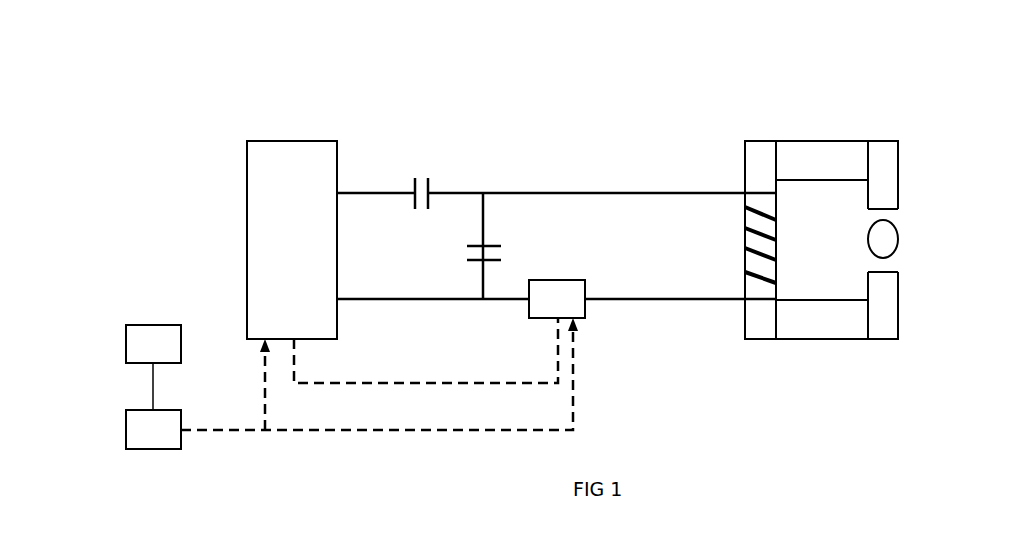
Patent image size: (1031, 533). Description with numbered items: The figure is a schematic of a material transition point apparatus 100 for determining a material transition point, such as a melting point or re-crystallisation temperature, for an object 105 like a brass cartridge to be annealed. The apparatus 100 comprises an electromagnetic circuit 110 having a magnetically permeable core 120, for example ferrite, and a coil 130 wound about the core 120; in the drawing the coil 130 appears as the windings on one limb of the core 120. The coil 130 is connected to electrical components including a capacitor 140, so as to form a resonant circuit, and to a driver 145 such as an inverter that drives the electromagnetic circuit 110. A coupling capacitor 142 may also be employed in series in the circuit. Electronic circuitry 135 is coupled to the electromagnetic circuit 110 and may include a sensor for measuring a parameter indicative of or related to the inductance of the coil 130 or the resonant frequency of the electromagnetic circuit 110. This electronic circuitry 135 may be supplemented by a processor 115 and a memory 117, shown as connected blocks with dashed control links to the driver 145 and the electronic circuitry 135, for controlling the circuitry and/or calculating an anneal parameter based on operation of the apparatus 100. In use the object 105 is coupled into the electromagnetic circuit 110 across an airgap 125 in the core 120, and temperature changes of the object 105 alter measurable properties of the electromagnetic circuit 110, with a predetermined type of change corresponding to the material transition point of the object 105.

The material transition point apparatus 100 is at (953, 47).
The object 105 is at (899, 240).
The electromagnetic circuit 110 is at (672, 131).
The processor 115 is at (125, 431).
The memory 117 is at (125, 363).
The magnetically permeable core 120 is at (798, 152).
The airgap 125 is at (903, 208).
The coil 130 is at (778, 246).
The electronic circuitry 135 is at (578, 315).
The capacitor 140 is at (505, 248).
The coupling capacitor 142 is at (435, 182).
The driver 145 is at (257, 227).